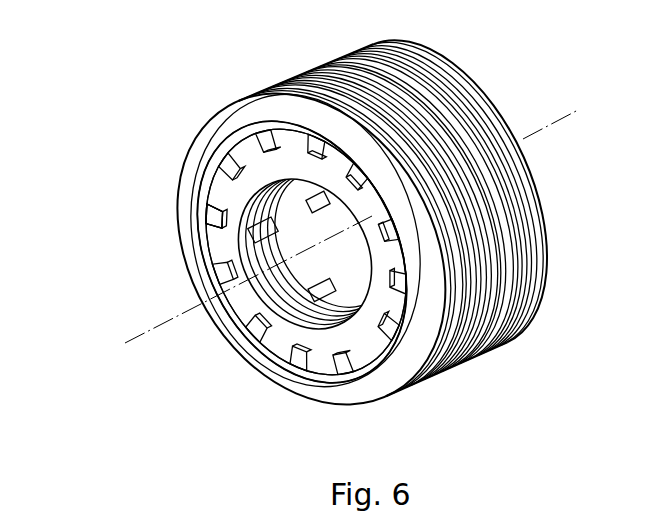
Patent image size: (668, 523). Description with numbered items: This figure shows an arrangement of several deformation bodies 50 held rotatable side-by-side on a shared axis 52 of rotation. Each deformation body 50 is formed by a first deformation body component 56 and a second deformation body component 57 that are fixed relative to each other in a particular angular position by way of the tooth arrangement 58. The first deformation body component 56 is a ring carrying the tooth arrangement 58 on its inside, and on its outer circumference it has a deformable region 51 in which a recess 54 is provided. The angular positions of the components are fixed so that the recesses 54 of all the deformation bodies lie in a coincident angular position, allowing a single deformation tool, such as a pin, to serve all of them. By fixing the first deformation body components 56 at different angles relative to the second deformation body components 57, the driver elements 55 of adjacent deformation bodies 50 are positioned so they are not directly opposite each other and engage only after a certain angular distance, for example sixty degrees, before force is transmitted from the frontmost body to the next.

The deformation body 50 is at (213, 215).
The deformable region 51 is at (342, 406).
The shared axis of rotation 52 is at (578, 111).
The recess 54 is at (292, 392).
The driver element 55 is at (262, 240).
The first deformation body component 56 is at (197, 257).
The second deformation body component 57 is at (213, 215).
The tooth arrangement 58 is at (288, 142).